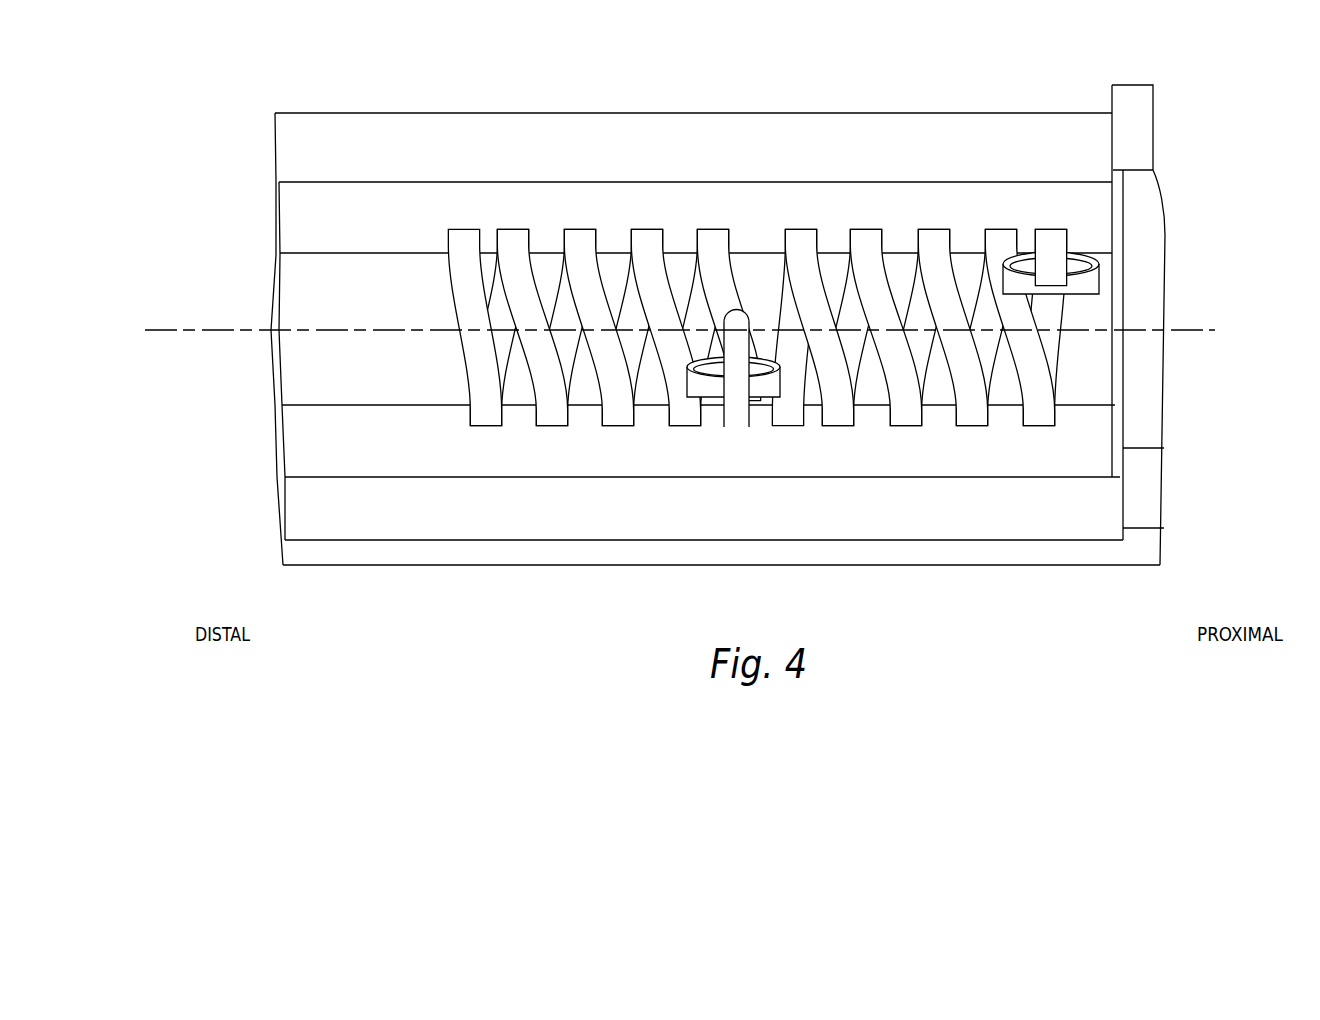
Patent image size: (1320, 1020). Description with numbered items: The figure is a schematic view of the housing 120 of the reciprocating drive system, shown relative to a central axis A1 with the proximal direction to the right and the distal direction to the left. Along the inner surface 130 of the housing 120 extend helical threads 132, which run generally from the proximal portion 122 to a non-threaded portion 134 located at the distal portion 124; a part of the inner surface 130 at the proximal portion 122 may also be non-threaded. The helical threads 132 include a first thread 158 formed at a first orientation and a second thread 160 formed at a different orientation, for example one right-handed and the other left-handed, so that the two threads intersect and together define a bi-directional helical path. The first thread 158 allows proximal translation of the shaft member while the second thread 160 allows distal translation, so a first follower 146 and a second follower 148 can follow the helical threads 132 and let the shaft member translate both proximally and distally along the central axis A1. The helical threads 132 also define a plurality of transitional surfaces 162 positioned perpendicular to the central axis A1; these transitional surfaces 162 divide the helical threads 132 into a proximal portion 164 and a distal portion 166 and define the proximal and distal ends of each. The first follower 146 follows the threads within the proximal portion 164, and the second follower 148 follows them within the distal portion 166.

The housing 120 is at (807, 122).
The proximal portion 122 is at (1103, 502).
The distal portion 124 is at (315, 528).
The inner surface 130 is at (403, 457).
The helical threads 132 is at (760, 332).
The non-threaded portion 134 is at (307, 302).
The first follower 146 is at (1103, 253).
The second follower 148 is at (737, 350).
The first thread 158 is at (493, 369).
The second thread 160 is at (495, 367).
The transitional surfaces 162 is at (809, 327).
The proximal portion 164 is at (1058, 438).
The distal portion 166 is at (752, 438).
The central axis A1 is at (218, 330).